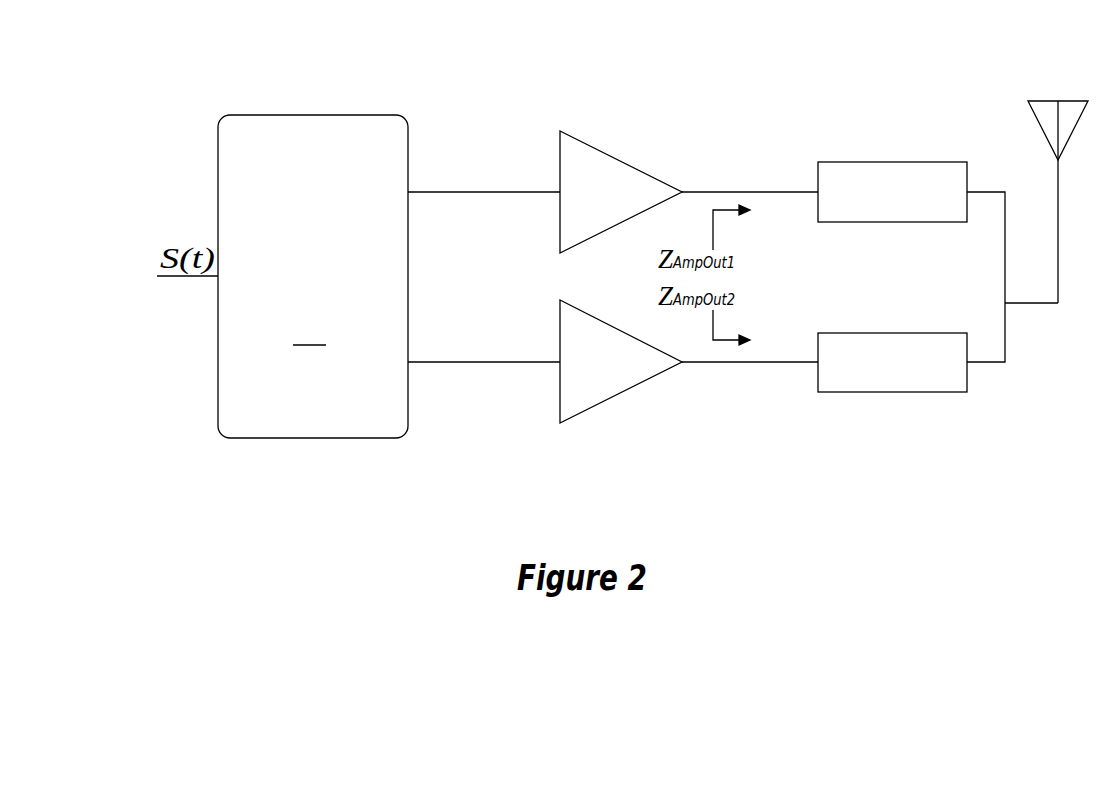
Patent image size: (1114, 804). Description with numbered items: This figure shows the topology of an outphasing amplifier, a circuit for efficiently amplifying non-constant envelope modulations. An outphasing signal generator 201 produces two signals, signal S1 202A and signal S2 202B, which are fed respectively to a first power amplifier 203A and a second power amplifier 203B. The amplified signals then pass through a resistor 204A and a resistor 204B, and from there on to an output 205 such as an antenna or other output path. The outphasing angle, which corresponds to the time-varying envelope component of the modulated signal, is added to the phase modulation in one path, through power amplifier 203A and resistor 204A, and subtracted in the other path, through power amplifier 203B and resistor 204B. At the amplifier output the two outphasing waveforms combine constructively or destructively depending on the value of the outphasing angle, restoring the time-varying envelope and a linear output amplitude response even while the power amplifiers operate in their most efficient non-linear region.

The outphasing signal generator 201 is at (218, 128).
The signal S1 202A is at (255, 81).
The signal S2 202B is at (260, 478).
The power amplifier 203A is at (633, 166).
The power amplifier 203B is at (645, 385).
The resistor 204A is at (890, 162).
The resistor 204B is at (902, 392).
The antenna 205 is at (1067, 101).